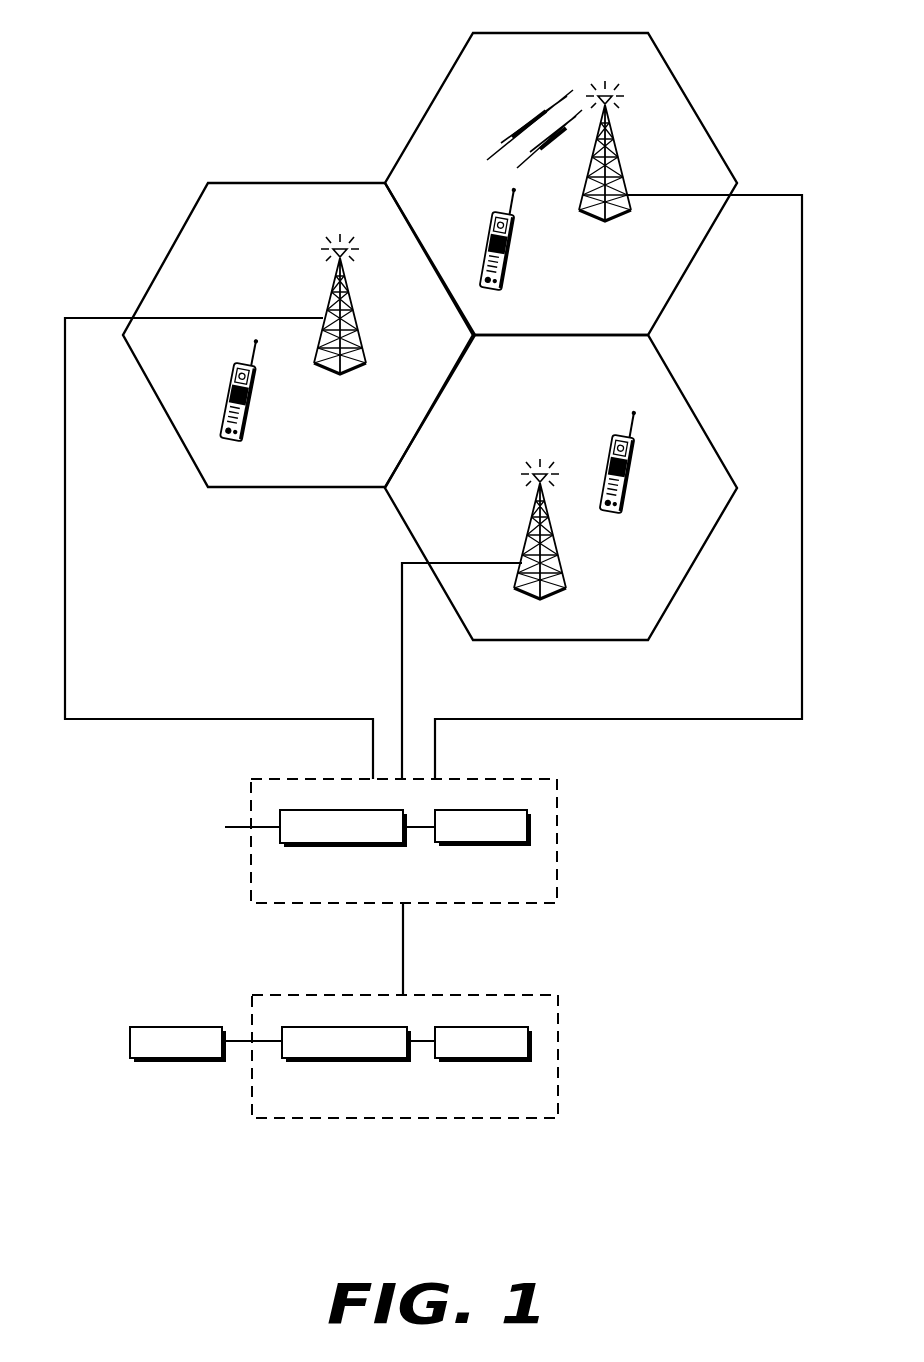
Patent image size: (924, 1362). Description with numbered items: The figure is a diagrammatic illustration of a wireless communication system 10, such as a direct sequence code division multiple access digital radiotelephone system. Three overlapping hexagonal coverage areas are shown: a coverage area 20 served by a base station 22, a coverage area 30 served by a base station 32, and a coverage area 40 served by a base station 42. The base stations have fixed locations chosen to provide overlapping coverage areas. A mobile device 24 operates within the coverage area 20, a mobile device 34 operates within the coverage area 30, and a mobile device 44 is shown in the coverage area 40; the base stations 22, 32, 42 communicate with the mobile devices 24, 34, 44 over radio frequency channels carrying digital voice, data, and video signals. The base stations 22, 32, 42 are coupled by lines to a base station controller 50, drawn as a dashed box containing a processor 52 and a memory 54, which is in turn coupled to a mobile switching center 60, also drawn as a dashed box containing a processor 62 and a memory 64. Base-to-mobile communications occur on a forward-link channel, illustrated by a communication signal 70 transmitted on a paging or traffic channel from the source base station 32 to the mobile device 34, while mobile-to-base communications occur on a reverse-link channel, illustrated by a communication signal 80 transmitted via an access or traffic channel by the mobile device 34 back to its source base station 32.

The wireless communication system 10 is at (314, 122).
The coverage area 20 is at (274, 226).
The base station 22 is at (330, 297).
The mobile device 24 is at (252, 402).
The coverage area 30 is at (661, 147).
The base station 32 is at (598, 220).
The mobile device 34 is at (487, 227).
The coverage area 40 is at (491, 384).
The base station 42 is at (564, 568).
The mobile device 44 is at (608, 453).
The base station controller (BSC) 50 is at (356, 833).
The processor 52 is at (293, 846).
The memory 54 is at (448, 845).
The mobile switching center (MSC) 60 is at (383, 1026).
The processor 62 is at (292, 1060).
The memory 64 is at (448, 1060).
The forward-link channel communication signal 70 is at (540, 148).
The reverse-link channel communication signal 80 is at (522, 123).